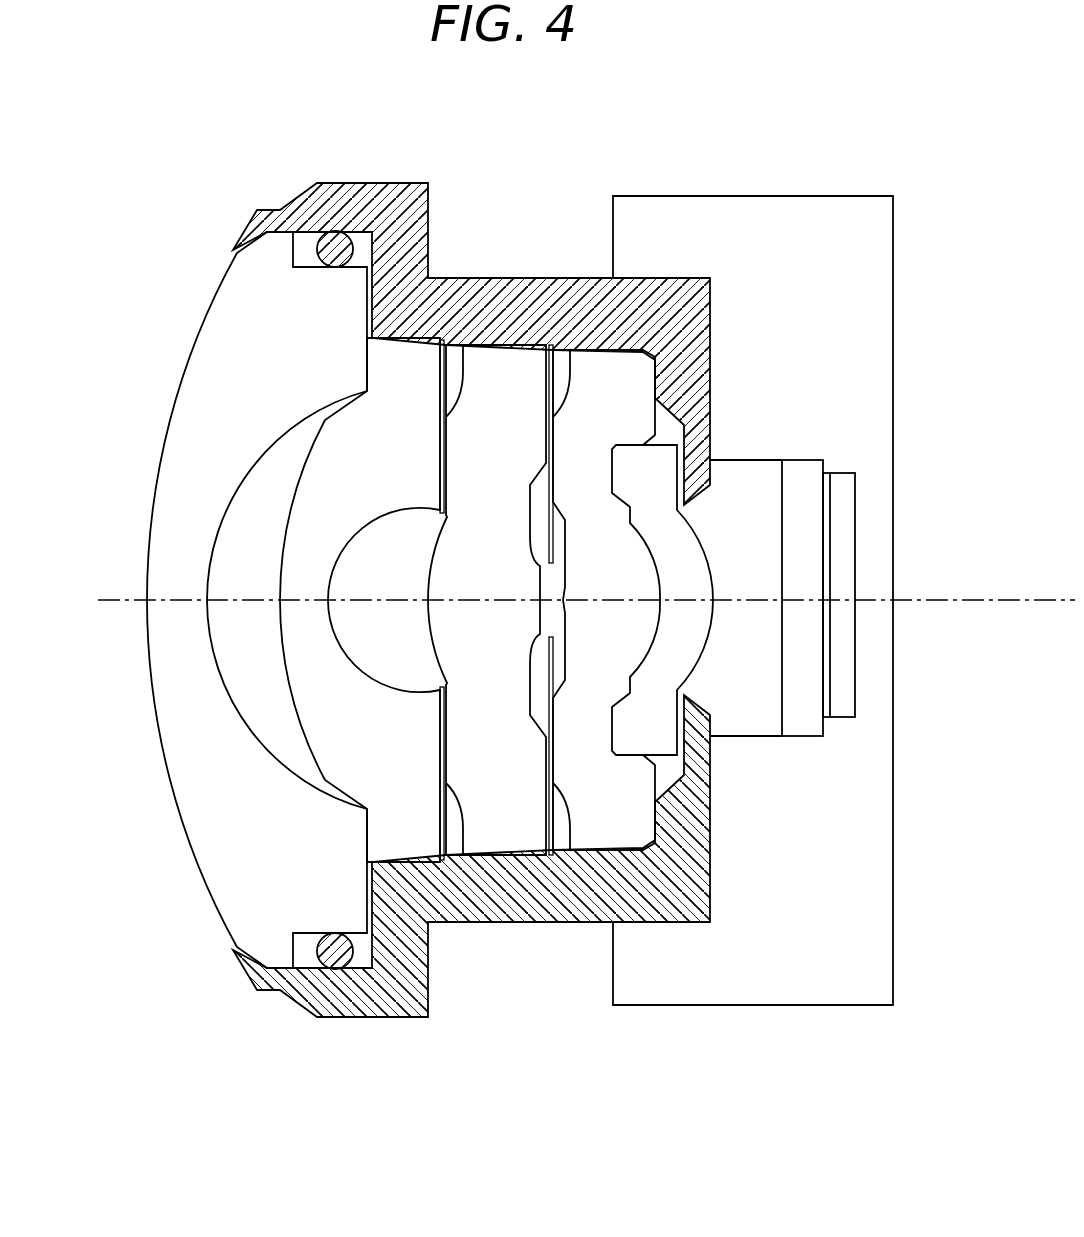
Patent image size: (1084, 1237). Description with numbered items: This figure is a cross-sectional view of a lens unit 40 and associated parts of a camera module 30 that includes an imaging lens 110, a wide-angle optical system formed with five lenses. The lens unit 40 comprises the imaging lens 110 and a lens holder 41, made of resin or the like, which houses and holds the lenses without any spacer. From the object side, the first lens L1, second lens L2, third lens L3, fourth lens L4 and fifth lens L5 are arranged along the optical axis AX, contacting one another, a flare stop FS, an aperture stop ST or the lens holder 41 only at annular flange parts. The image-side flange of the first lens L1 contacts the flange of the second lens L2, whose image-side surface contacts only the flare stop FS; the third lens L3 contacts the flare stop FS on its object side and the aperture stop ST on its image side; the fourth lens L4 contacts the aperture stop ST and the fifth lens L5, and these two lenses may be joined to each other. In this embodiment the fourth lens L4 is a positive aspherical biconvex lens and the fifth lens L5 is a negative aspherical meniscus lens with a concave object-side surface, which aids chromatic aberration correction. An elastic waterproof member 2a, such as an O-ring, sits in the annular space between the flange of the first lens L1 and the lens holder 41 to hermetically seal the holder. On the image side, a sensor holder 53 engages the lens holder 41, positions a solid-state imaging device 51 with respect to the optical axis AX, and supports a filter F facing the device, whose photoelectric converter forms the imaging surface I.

The camera module 30 is at (803, 98).
The sensor holder 53 is at (738, 207).
The filter F is at (802, 728).
The solid-state imaging device 51 is at (845, 607).
The imaging surface I is at (828, 567).
The lens unit 40 is at (560, 208).
The lens holder 41 is at (523, 287).
The waterproof member 2a is at (335, 240).
The imaging lens 110 is at (163, 330).
The optical axis AX is at (247, 600).
The first lens L1 is at (282, 873).
The second lens L2 is at (397, 840).
The flare stop FS is at (450, 412).
The third lens L3 is at (502, 812).
The aperture stop ST is at (558, 412).
The fourth lens L4 is at (599, 797).
The fifth lens L5 is at (677, 648).